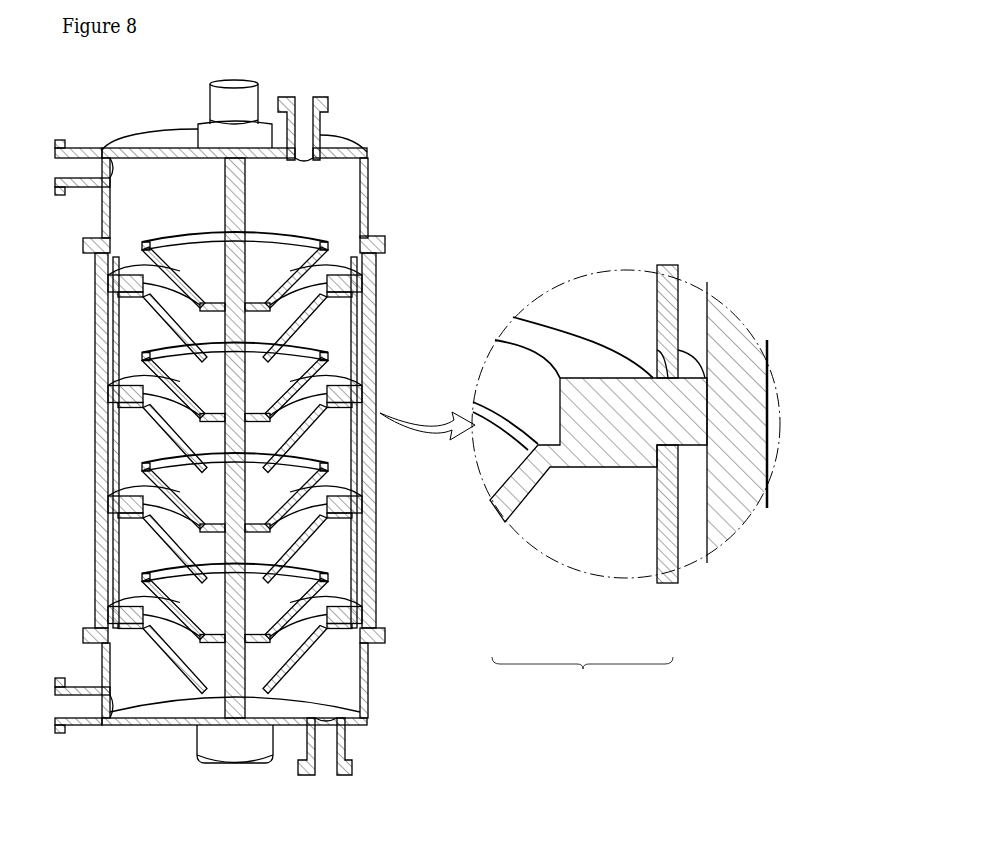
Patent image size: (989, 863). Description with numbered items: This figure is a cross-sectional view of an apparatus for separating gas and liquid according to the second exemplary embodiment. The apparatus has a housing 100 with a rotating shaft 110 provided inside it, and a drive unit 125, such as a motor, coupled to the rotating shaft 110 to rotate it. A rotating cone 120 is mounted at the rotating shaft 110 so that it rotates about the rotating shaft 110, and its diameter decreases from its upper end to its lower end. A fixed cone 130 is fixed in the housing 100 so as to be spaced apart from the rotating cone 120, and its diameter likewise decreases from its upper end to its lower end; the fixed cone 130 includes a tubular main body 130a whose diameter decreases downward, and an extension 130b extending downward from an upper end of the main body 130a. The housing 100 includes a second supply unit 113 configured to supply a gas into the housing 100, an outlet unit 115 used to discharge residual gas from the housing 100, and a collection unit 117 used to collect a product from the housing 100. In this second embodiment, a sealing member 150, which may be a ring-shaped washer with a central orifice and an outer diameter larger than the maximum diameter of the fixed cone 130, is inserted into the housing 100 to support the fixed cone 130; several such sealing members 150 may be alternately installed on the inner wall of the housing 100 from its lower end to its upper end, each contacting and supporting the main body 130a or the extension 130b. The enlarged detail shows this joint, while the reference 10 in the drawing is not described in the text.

The rotating shaft 10 is at (222, 178).
The housing 100 is at (418, 142).
The rotating shaft 110 is at (60, 143).
The second supply unit 113 is at (60, 679).
The outlet unit 115 is at (327, 123).
The collection unit 117 is at (300, 770).
The rotating cone 120 is at (283, 241).
The drive unit 125 is at (197, 742).
The fixed cone 130 is at (582, 677).
The main body 130a is at (356, 310).
The extension 130b is at (355, 360).
The sealing member 150 is at (378, 392).